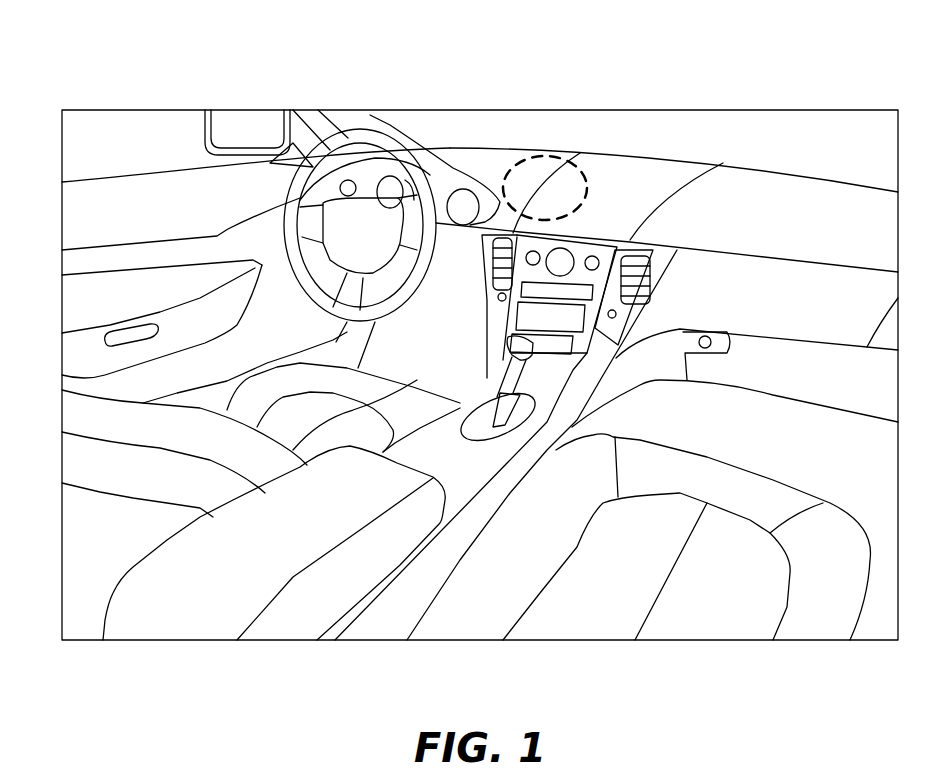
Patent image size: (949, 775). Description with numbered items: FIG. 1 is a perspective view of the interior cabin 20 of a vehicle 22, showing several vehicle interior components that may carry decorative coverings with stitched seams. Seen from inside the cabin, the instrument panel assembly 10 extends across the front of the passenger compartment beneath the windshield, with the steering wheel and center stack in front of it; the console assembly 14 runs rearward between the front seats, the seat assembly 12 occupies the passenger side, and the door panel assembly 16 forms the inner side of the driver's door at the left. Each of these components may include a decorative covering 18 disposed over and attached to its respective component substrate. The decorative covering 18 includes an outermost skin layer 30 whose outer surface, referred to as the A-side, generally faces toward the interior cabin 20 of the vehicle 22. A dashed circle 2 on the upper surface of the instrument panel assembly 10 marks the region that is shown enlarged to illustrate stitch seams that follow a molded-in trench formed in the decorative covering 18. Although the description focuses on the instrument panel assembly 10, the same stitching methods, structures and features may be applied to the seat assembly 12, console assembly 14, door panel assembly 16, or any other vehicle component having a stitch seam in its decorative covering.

The enlarged view location 2 is at (547, 150).
The instrument panel assembly 10 is at (732, 173).
The seat assembly 12 is at (807, 610).
The console assembly 14 is at (291, 610).
The door panel assembly 16 is at (75, 190).
The decorative covering 18 is at (807, 195).
The interior cabin 20 is at (658, 118).
The vehicle 22 is at (769, 82).
The skin layer 30 is at (863, 225).